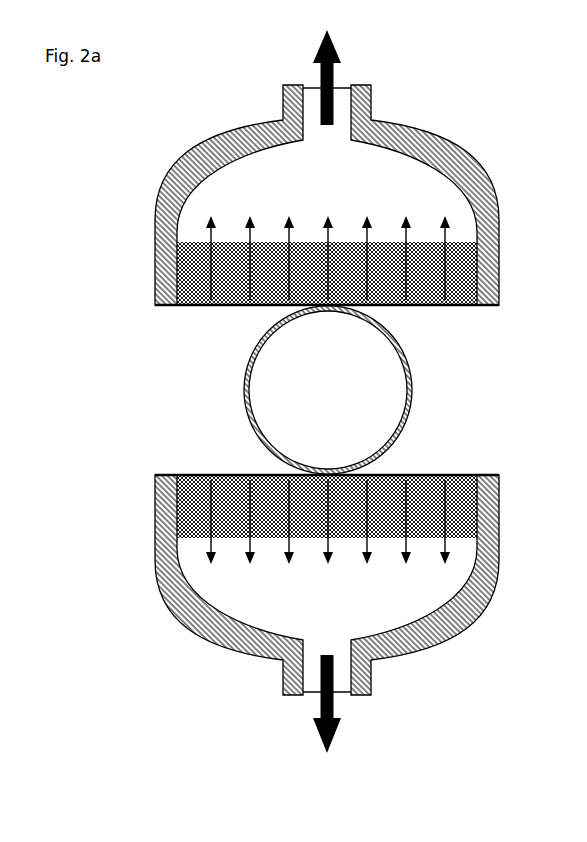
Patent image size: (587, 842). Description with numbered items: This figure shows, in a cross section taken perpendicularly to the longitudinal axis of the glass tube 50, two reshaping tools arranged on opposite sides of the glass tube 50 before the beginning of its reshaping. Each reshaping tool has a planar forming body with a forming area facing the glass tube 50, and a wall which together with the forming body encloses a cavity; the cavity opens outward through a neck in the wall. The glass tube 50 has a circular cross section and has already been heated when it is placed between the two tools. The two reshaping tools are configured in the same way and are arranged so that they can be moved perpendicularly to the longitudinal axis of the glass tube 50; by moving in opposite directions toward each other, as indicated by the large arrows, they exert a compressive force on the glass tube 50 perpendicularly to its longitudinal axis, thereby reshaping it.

The glass tube 50 is at (413, 400).